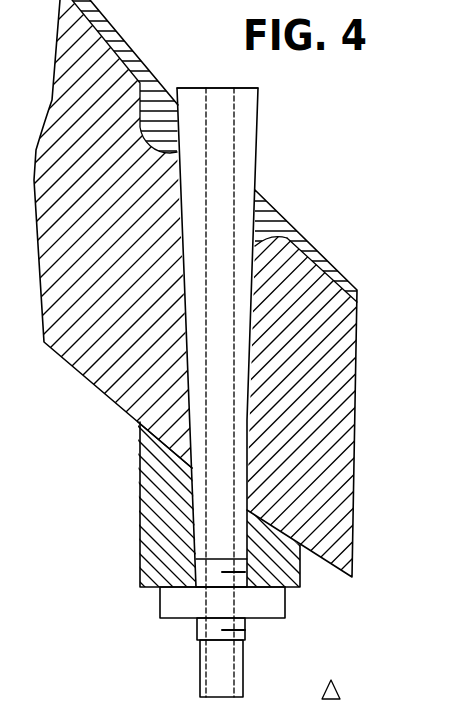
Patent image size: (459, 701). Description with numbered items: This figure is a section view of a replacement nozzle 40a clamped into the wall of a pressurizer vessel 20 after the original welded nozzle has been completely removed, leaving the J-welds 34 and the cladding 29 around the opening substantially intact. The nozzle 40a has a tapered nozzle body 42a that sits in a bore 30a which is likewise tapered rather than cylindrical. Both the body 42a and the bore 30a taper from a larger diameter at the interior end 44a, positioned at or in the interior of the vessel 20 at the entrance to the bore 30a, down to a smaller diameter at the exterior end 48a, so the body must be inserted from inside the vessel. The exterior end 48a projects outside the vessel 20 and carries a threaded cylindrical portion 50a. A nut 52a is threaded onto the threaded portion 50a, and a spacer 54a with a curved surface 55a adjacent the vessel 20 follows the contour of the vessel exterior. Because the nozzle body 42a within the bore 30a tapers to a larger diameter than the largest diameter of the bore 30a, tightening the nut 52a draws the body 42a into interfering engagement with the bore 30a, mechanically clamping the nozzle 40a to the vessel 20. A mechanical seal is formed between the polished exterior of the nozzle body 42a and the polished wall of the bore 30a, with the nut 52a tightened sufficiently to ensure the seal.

The vessel 20 is at (339, 362).
The cladding 29 is at (318, 253).
The J-welds 34 is at (278, 220).
The replacement nozzle 40a is at (268, 171).
The tapered nozzle body 42a is at (241, 359).
The interior end 44a is at (190, 95).
The bore 30a is at (186, 250).
The curved surface 55a is at (152, 430).
The spacer 54a is at (150, 517).
The nut 52a is at (165, 603).
The cylindrical portion 50a is at (198, 628).
The exterior end 48a is at (248, 668).